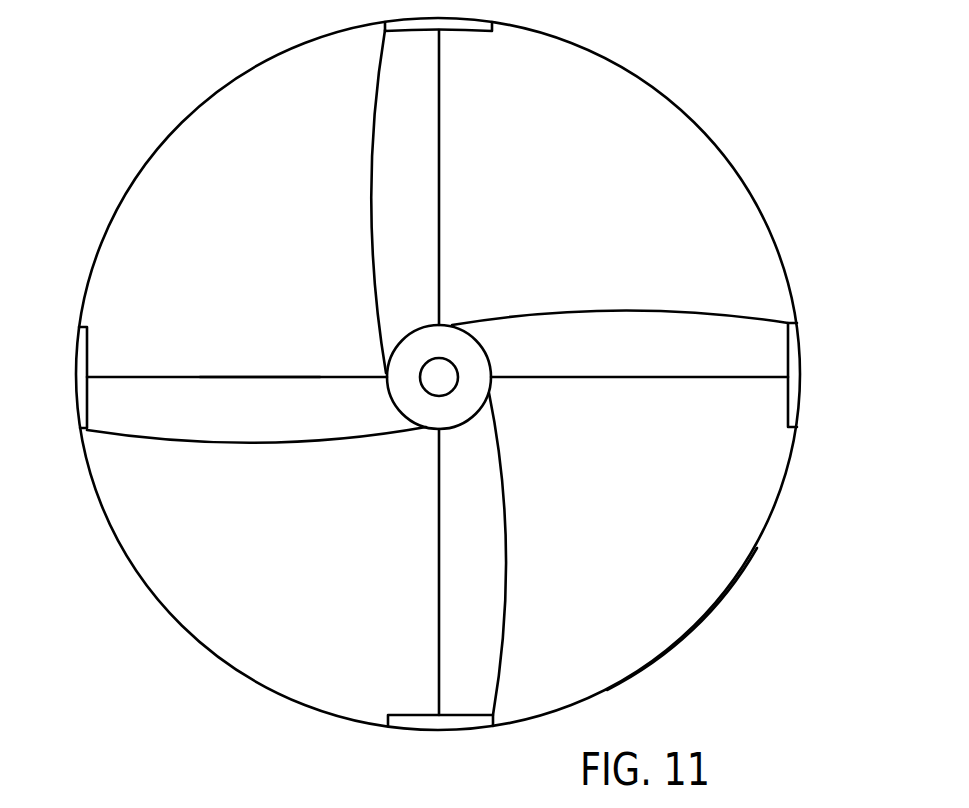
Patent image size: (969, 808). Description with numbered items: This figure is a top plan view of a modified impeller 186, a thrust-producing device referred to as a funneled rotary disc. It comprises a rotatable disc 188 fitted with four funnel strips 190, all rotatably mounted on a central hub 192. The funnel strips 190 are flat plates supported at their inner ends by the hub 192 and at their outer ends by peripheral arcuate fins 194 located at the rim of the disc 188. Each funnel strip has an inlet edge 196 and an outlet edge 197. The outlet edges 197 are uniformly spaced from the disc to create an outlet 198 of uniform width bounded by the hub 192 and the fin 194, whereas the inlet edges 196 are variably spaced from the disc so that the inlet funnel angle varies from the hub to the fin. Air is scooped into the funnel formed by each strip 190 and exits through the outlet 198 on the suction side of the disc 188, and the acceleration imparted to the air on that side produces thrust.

The modified impeller 186 is at (693, 118).
The rotatable disc 188 is at (697, 608).
The funnel strips 190 is at (710, 317).
The hub 192 is at (480, 345).
The peripheral arcuate fins 194 is at (73, 398).
The inlet edge 196 is at (160, 442).
The outlet edge 197 is at (158, 377).
The outlet 198 is at (252, 377).